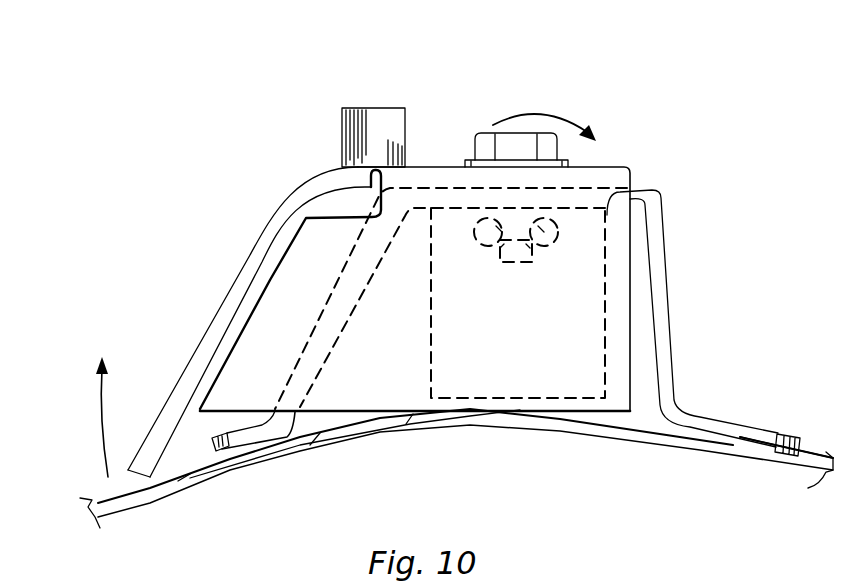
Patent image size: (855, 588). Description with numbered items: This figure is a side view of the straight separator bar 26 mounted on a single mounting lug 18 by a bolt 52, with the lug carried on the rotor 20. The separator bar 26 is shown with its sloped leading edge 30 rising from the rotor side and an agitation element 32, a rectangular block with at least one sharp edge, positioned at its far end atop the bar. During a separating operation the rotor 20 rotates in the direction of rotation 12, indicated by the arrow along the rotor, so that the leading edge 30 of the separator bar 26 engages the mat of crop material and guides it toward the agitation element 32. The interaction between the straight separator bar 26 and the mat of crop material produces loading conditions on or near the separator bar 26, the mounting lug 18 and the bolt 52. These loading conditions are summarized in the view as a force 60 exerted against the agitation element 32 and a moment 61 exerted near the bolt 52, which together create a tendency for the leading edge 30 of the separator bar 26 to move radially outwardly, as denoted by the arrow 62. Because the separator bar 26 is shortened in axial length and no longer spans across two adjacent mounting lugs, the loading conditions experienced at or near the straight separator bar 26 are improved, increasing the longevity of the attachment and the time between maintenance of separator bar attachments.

The direction of rotation 12 is at (413, 457).
The mounting lug 18 is at (679, 254).
The rotor 20 is at (761, 460).
The straight separator bar 26 is at (690, 131).
The leading edge 30 is at (206, 298).
The agitation element 32 is at (366, 115).
The bolt 52 is at (537, 94).
The force 60 is at (342, 143).
The moment 61 is at (570, 103).
The arrow 62 is at (100, 420).